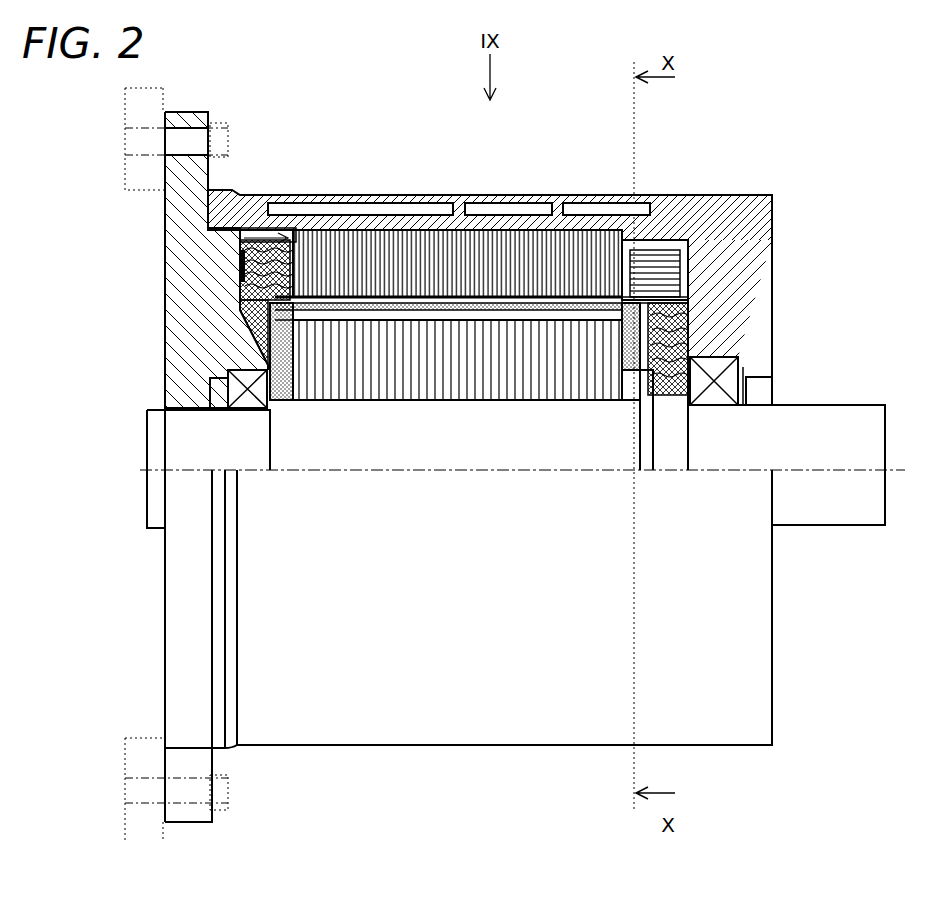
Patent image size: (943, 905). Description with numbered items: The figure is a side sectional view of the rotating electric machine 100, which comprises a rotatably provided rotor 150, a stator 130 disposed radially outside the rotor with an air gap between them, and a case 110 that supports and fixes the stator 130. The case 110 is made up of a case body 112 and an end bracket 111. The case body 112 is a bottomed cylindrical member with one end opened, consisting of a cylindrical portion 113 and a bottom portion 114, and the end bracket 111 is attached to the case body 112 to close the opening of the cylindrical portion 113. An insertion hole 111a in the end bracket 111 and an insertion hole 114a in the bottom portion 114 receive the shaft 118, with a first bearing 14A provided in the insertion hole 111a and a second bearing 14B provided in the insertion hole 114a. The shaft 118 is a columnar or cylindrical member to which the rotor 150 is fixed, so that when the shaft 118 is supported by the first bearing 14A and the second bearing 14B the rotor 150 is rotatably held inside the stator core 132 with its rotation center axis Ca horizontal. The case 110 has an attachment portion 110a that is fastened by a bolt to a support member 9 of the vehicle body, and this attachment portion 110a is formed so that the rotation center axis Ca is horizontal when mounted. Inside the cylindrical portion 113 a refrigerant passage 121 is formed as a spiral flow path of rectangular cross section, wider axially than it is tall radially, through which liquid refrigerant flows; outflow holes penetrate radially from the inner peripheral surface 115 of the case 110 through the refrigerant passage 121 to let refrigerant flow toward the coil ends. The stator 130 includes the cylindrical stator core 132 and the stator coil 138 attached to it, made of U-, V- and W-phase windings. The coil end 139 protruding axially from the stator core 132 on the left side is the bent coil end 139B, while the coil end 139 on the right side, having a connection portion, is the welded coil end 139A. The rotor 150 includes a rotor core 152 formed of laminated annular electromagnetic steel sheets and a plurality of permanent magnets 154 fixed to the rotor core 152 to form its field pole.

The rotating electric machine 100 is at (792, 154).
The case 110 is at (660, 186).
The end bracket 111 is at (184, 467).
The insertion hole 111a is at (208, 378).
The attachment portion 110a is at (212, 112).
The case body 112 is at (772, 193).
The cylindrical portion 113 is at (356, 210).
The refrigerant passage 121 is at (413, 208).
The bottom portion 114 is at (784, 326).
The insertion hole 114a is at (772, 388).
The inner peripheral surface 115 is at (698, 200).
The shaft 118 is at (822, 512).
The first bearing 14A is at (228, 388).
The second bearing 14B is at (746, 370).
The stator 130 is at (487, 255).
The stator core 132 is at (330, 250).
The stator coil 138 is at (682, 275).
The coil end 139 is at (487, 298).
The welded coil end 139A is at (690, 256).
The bent coil end 139B is at (245, 266).
The rotor 150 is at (479, 292).
The rotor core 152 is at (460, 296).
The permanent magnets 154 is at (512, 322).
The support member 9 is at (174, 100).
The rotation center axis Ca is at (504, 470).